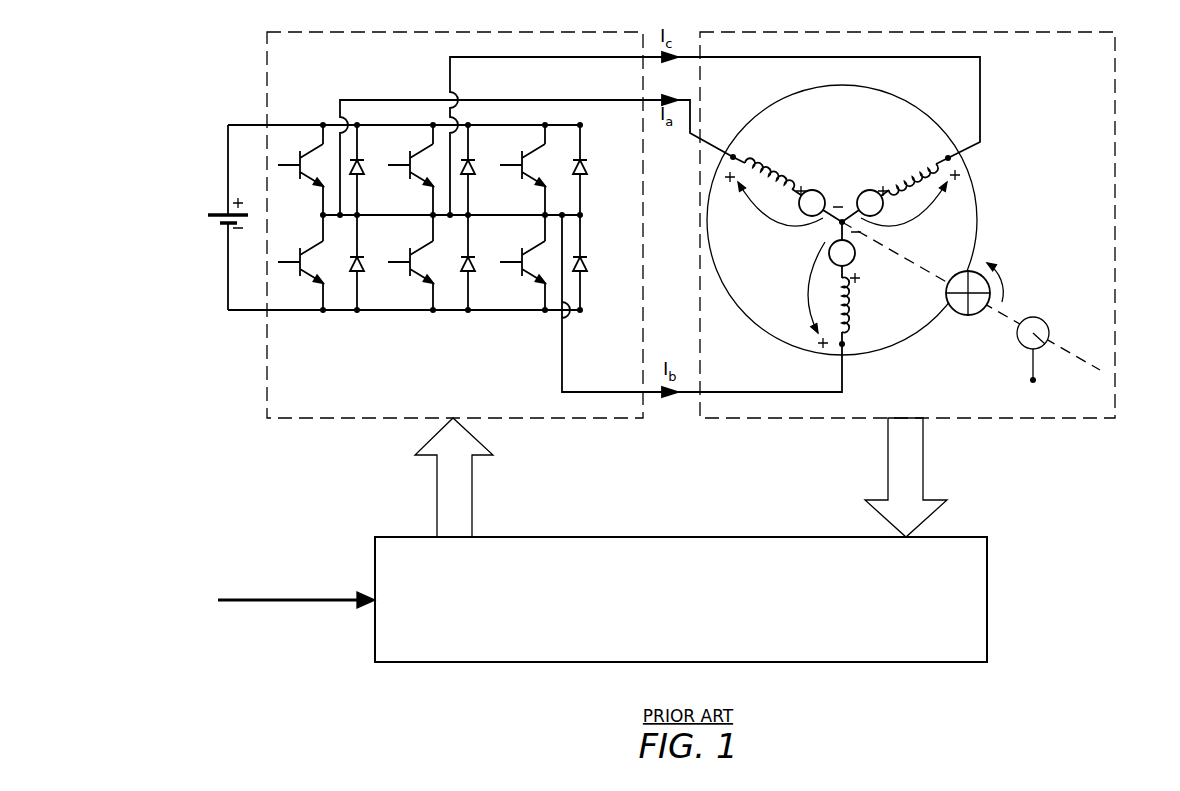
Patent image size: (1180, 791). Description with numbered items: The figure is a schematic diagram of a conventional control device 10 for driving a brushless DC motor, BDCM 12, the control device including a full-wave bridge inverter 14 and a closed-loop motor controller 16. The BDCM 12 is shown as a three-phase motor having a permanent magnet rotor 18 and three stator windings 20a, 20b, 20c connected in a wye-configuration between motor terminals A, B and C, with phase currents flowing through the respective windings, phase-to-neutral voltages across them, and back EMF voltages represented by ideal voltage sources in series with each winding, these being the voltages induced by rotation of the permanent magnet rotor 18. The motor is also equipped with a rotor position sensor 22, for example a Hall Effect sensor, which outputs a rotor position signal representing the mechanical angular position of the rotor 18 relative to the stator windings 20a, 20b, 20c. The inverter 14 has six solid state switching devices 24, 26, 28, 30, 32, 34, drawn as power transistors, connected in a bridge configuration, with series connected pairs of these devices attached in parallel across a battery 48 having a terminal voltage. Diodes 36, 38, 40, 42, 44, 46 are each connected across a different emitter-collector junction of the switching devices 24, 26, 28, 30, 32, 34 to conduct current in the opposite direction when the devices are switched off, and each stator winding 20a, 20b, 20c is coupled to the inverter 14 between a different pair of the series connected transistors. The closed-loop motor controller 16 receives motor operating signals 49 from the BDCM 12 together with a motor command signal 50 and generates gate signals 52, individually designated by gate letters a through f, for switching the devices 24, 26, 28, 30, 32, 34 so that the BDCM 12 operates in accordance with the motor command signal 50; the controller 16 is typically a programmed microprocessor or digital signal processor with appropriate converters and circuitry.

The control device 10 is at (282, 478).
The BDCM 12 is at (1115, 101).
The full-wave bridge inverter 14 is at (286, 78).
The closed-loop motor controller 16 is at (989, 598).
The permanent magnet rotor 18 is at (955, 315).
The stator winding 20a is at (775, 167).
The stator winding 20b is at (852, 300).
The stator winding 20c is at (918, 178).
The rotor position sensor 22 is at (1043, 318).
The solid state switching device 24 is at (301, 181).
The solid state switching device 26 is at (301, 272).
The solid state switching device 28 is at (411, 181).
The solid state switching device 30 is at (411, 272).
The solid state switching device 32 is at (523, 181).
The solid state switching device 34 is at (523, 272).
The diode 36 is at (359, 165).
The diode 38 is at (359, 262).
The diode 40 is at (470, 165).
The diode 42 is at (470, 262).
The diode 44 is at (582, 165).
The diode 46 is at (582, 262).
The battery 48 is at (215, 212).
The motor operating signals 49 is at (894, 478).
The motor command signal 50 is at (298, 603).
The gate signals 52 is at (444, 512).